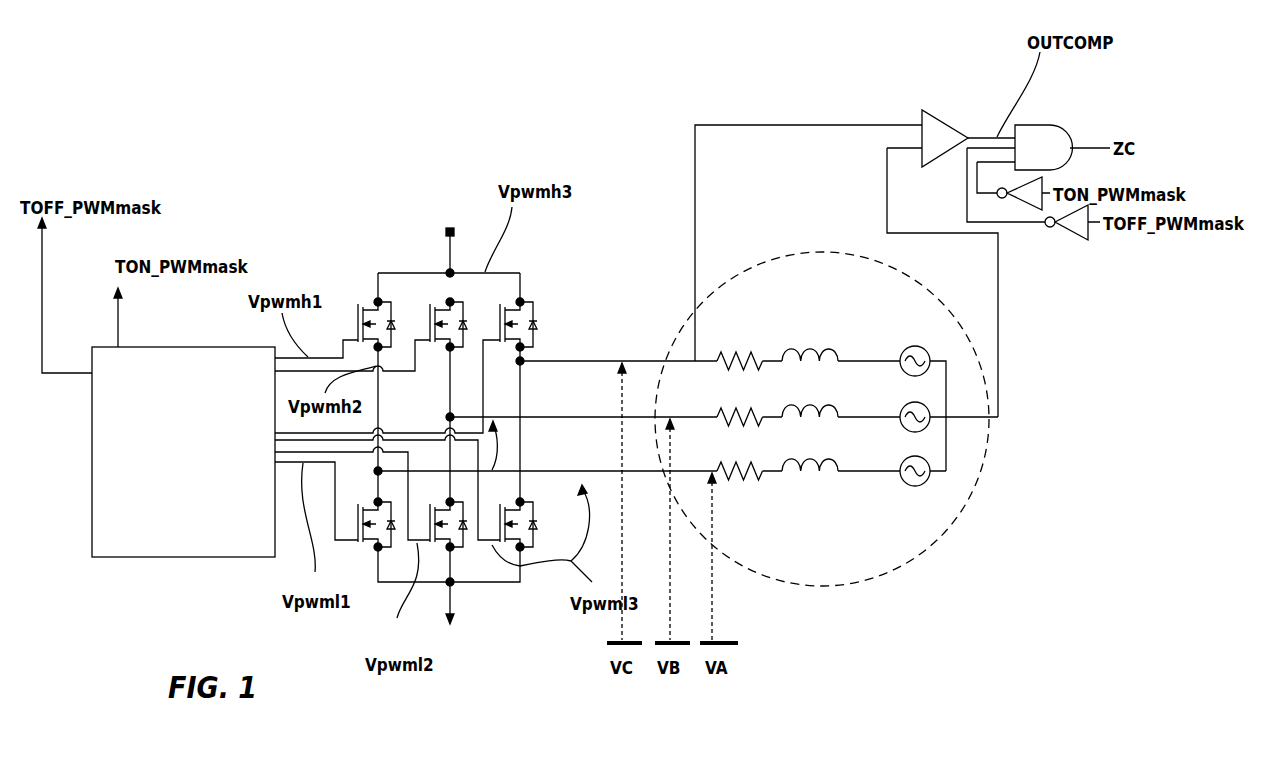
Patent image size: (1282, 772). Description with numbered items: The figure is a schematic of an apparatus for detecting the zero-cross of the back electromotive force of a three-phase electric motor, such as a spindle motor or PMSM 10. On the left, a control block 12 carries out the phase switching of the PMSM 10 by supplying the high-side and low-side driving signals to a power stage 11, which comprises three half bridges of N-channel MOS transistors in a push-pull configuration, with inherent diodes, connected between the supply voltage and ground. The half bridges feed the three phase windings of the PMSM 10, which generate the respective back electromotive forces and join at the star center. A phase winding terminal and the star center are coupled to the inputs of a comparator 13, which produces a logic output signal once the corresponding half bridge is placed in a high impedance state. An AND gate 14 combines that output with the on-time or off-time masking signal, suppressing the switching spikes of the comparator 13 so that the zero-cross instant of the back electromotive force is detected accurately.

The PMSM 10 is at (815, 252).
The power stage 11 is at (412, 272).
The control block 12 is at (183, 452).
The comparator 13 is at (955, 132).
The AND gate 14 is at (1040, 127).